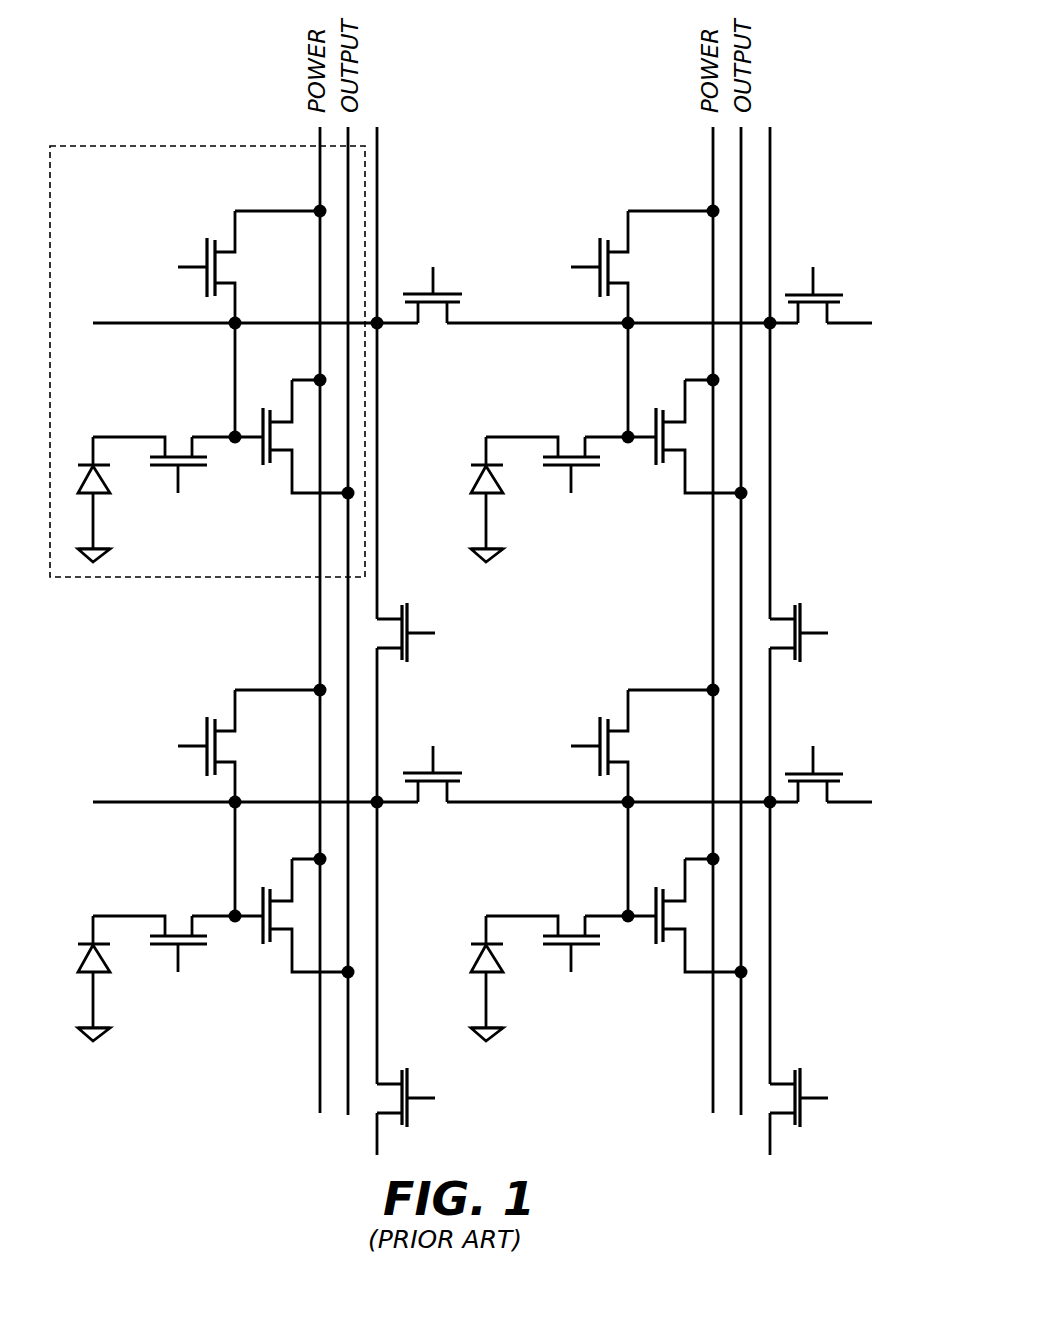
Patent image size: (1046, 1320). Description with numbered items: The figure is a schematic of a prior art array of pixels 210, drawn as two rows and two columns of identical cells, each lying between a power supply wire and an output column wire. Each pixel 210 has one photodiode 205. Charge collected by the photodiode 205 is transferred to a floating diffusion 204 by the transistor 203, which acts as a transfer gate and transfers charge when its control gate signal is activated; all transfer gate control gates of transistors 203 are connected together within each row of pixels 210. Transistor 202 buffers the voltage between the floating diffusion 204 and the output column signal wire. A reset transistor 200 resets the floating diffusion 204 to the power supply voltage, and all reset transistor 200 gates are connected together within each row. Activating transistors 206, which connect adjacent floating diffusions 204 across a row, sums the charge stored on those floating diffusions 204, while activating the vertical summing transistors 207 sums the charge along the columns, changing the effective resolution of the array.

The reset transistor 200 is at (230, 272).
The transistor 202 is at (262, 452).
The transistor 203 is at (189, 468).
The floating diffusion 204 is at (233, 435).
The photodiode 205 is at (101, 499).
The transistor 206 is at (433, 316).
The vertical summing transistor 207 is at (411, 645).
The pixel 210 is at (125, 146).